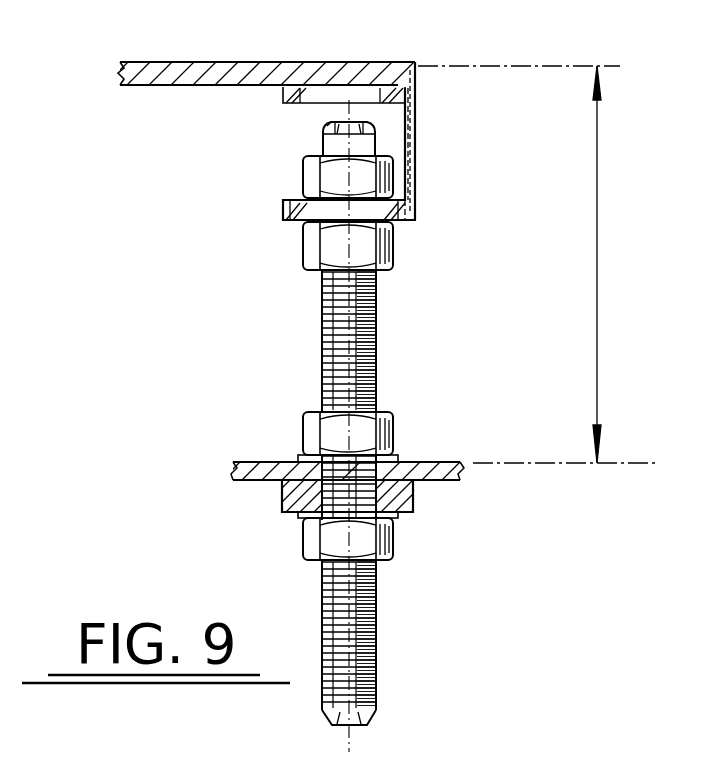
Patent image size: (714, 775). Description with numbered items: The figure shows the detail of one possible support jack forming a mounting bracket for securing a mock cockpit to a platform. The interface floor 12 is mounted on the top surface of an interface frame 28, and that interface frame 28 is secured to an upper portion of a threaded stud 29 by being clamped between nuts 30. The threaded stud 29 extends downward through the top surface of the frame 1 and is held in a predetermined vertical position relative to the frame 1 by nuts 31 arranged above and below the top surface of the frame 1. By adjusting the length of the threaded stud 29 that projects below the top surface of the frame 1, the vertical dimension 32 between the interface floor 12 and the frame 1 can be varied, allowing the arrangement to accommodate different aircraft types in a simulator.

The frame 1 is at (262, 457).
The interface floor 12 is at (268, 78).
The interface frame 28 is at (417, 148).
The threaded stud 29 is at (347, 357).
The nuts 30 is at (330, 246).
The nuts 31 is at (393, 436).
The dimension 32 is at (537, 264).